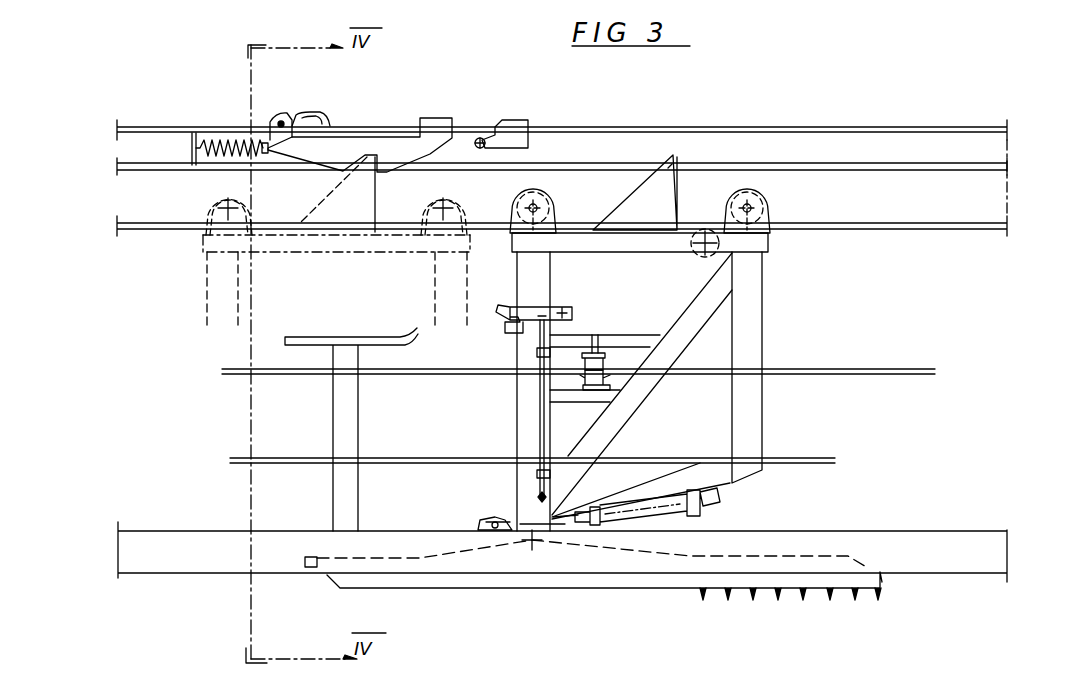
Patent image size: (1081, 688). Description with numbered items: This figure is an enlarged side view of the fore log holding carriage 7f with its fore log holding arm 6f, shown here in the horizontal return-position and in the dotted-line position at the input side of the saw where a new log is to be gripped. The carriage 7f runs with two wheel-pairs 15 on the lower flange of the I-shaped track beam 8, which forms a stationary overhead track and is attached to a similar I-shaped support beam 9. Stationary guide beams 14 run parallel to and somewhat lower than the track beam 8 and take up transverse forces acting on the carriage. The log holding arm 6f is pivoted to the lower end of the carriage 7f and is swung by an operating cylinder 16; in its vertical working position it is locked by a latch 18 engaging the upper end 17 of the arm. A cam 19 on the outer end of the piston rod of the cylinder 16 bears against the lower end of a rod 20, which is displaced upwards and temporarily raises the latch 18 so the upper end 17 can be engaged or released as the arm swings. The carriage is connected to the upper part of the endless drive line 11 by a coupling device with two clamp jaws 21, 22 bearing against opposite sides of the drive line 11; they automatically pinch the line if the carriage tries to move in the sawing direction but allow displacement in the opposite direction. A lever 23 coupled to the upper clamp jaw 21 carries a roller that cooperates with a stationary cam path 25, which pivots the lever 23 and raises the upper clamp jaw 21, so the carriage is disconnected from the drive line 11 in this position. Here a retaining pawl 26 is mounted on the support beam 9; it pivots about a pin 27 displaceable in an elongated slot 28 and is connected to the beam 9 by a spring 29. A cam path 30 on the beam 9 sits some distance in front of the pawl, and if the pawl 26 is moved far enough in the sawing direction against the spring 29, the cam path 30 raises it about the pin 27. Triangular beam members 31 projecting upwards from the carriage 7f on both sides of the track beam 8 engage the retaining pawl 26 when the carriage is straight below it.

The fore log holding arm 6f is at (752, 578).
The fore log holding carriage 7f is at (750, 330).
The track beam 8 is at (990, 208).
The support beam 9 is at (987, 148).
The drive line 11 is at (860, 372).
The guide beams 14 is at (930, 542).
The wheel-pairs 15 is at (550, 202).
The operating cylinder 16 is at (658, 512).
The upper end of the log holding arm 17 is at (313, 565).
The latch 18 is at (512, 308).
The cam 19 is at (495, 520).
The rod 20 is at (542, 427).
The upper clamp jaw 21 is at (607, 367).
The clamp jaw 22 is at (610, 378).
The lever 23 is at (597, 353).
The stationary cam path 25 is at (380, 340).
The retaining pawl 26 is at (340, 150).
The pin 27 is at (283, 117).
The elongated slot 28 is at (307, 120).
The spring 29 is at (225, 140).
The cam path 30 is at (517, 130).
The triangular beam members 31 is at (668, 172).